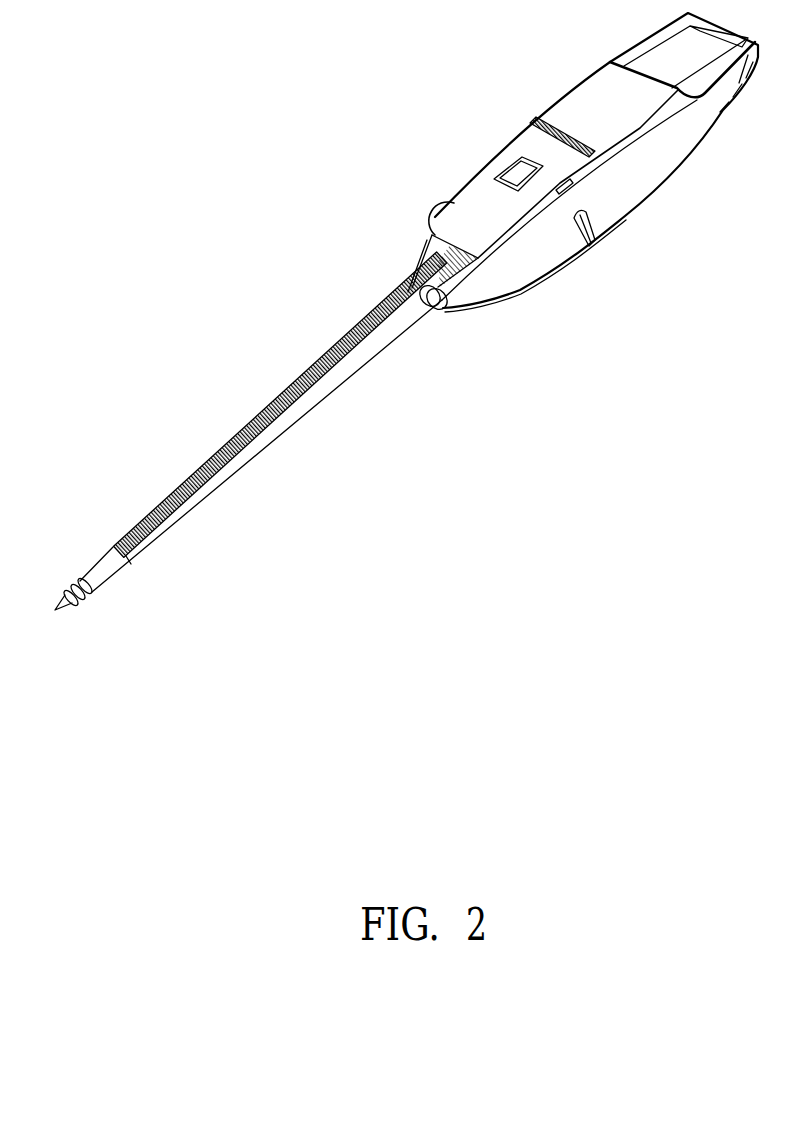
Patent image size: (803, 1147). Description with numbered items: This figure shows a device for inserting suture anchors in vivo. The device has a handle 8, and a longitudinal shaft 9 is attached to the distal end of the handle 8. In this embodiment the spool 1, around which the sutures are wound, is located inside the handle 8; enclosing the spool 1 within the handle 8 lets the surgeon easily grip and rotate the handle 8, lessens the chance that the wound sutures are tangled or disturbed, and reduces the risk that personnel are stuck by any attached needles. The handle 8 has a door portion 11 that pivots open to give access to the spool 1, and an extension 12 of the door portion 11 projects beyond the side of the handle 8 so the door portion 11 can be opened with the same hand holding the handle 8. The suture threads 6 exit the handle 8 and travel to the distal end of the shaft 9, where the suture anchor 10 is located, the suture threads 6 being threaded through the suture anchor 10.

The spool 1 is at (584, 240).
The suture threads 6 is at (258, 422).
The handle 8 is at (640, 173).
The longitudinal shaft 9 is at (273, 430).
The suture anchor 10 is at (73, 612).
The door portion 11 is at (478, 188).
The extension 12 is at (437, 207).